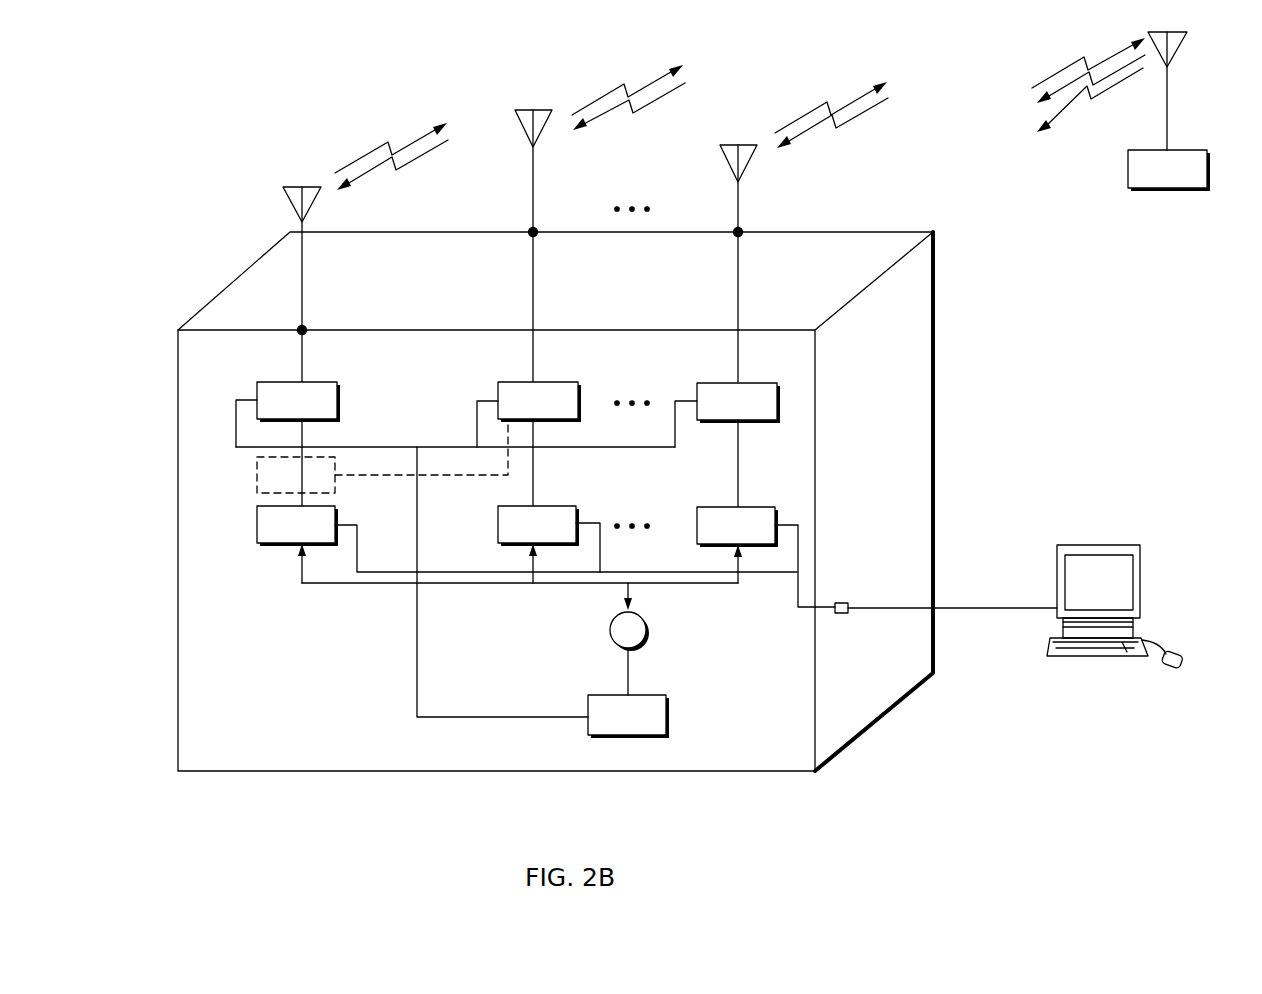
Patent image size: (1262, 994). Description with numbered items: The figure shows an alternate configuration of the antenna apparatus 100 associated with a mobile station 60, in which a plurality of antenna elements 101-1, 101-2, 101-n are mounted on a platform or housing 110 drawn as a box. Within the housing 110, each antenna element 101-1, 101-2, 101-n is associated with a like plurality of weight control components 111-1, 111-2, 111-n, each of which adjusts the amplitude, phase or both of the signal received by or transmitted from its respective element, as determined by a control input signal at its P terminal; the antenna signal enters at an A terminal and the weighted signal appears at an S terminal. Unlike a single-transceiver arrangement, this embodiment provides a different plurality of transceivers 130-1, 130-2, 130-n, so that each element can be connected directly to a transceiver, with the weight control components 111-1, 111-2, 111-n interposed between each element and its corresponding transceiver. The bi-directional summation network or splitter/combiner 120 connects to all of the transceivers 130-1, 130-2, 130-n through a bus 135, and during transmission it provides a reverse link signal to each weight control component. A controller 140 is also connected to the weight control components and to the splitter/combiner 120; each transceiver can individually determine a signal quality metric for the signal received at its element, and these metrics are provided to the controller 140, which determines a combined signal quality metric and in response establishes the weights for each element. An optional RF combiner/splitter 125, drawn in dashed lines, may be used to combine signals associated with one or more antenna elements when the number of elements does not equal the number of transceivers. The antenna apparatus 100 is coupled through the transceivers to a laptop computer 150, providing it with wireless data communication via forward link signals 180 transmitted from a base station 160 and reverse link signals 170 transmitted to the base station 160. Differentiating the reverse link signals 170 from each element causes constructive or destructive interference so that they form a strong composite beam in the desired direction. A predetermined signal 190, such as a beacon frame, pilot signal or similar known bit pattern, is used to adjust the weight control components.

The antenna apparatus 100 is at (207, 186).
The housing 110 is at (680, 772).
The mobile station 60 is at (937, 420).
The antenna element 101-1 is at (304, 283).
The antenna element 101-2 is at (535, 182).
The antenna element 101-n is at (740, 207).
The weight control component 111-1 is at (288, 405).
The weight control component 111-2 is at (529, 405).
The weight control component 111-n is at (727, 405).
The RF combiner/splitter 125 is at (257, 482).
The transceiver 130-1 is at (527, 544).
The transceiver 130-2 is at (549, 544).
The transceiver 130-n is at (766, 557).
The bus 135 is at (516, 583).
The splitter/combiner 120 is at (646, 632).
The controller 140 is at (543, 592).
The laptop computer 150 is at (1140, 583).
The base station 160 is at (1169, 111).
The reverse link signals 170 is at (371, 152).
The forward link signals 180 is at (400, 163).
The predetermined signal 190 is at (1073, 110).